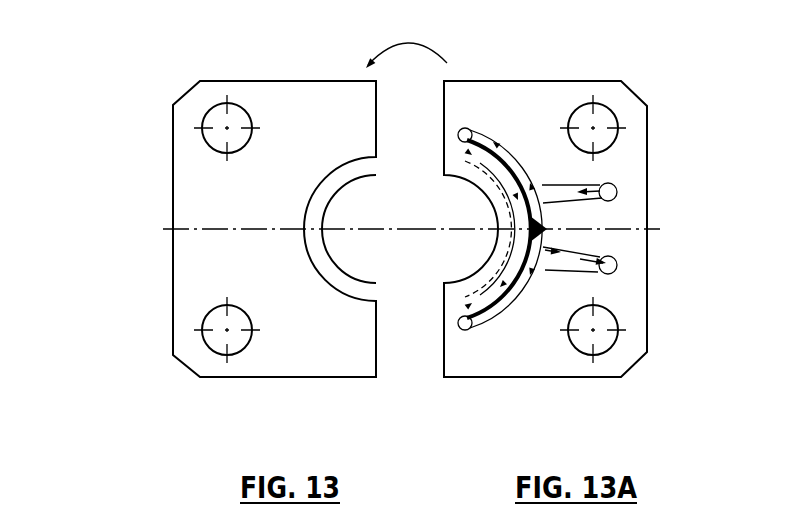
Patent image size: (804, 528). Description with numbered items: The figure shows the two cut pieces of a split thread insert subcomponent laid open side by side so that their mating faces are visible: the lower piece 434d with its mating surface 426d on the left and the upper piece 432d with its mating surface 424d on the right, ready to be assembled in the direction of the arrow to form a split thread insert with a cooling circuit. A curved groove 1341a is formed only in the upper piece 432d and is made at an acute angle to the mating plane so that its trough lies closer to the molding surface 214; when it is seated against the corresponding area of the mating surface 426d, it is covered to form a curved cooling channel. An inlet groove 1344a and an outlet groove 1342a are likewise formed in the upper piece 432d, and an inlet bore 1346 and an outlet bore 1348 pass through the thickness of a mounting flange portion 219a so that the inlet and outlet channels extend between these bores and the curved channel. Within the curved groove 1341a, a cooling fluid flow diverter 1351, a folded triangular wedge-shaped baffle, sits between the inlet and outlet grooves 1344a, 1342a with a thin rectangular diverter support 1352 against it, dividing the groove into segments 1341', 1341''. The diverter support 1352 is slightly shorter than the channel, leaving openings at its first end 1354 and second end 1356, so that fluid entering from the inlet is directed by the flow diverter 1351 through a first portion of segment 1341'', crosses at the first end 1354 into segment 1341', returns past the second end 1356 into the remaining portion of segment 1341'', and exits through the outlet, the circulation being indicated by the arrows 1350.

In FIG. 13, the lower piece 434d is at (150, 160).
In FIG. 13, the mating surface 426d is at (335, 119).
In FIG. 13A, the mating surface 424d is at (505, 113).
In FIG. 13A, the upper piece 432d is at (664, 110).
In FIG. 13, the molding surface 214 is at (338, 213).
In FIG. 13A, the molding surface 214 is at (484, 215).
In FIG. 13A, the arrows 1350 is at (505, 147).
In FIG. 13A, the first end 1354 is at (462, 131).
In FIG. 13A, the second end 1356 is at (466, 331).
In FIG. 13A, the inlet bore 1346 is at (618, 189).
In FIG. 13A, the outlet bore 1348 is at (617, 265).
In FIG. 13A, the cooling fluid flow diverter 1351 is at (549, 237).
In FIG. 13A, the inlet groove 1344a is at (567, 185).
In FIG. 13A, the outlet groove 1342a is at (590, 272).
In FIG. 13A, the mounting flange portion 219a is at (603, 256).
In FIG. 13A, the segment 1341' is at (444, 236).
In FIG. 13A, the segment 1341'' is at (570, 351).
In FIG. 13A, the curved groove 1341a is at (492, 312).
In FIG. 13A, the diverter support 1352 is at (487, 300).